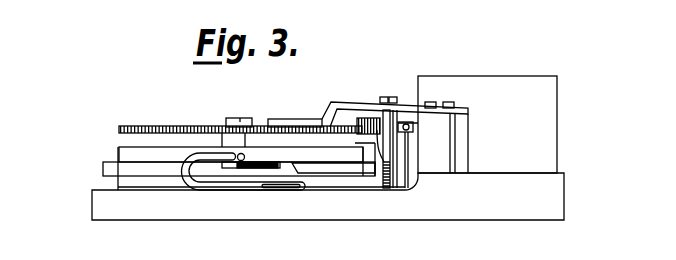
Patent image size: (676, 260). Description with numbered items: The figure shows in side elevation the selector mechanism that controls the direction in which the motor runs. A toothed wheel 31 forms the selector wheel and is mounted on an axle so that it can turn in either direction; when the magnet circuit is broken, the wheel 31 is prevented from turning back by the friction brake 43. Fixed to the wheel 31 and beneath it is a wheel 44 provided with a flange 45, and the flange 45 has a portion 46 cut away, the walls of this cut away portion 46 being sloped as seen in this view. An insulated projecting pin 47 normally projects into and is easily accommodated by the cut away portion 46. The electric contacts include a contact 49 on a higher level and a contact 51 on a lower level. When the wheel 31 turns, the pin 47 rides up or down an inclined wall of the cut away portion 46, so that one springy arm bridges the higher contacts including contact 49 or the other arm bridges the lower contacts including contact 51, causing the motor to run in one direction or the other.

The toothed wheel 31 is at (210, 127).
The friction brake 43 is at (357, 105).
The wheel 44 is at (126, 152).
The flange 45 is at (116, 170).
The cut away portion 46 is at (291, 141).
The insulated projecting pin 47 is at (243, 153).
The electric contact 49 is at (217, 157).
The electric contact 51 is at (289, 150).